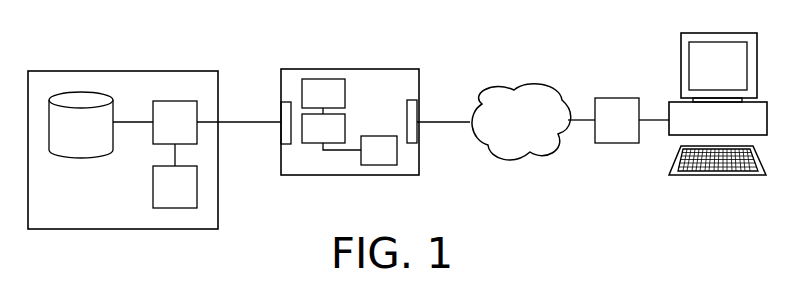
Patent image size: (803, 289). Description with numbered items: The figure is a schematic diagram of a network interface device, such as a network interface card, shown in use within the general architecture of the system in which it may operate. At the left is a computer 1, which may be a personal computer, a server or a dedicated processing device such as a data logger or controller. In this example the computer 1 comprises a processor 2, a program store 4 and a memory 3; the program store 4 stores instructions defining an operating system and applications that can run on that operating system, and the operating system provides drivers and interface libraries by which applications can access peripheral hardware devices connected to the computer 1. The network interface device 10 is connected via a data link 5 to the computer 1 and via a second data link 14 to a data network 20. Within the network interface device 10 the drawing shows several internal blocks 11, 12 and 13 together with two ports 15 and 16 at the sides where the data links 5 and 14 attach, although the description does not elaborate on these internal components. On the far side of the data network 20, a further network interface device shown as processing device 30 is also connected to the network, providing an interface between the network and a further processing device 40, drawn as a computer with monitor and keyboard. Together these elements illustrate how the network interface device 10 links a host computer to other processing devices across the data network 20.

The computer 1 is at (50, 229).
The processor 2 is at (175, 101).
The memory 3 is at (175, 208).
The program store 4 is at (80, 92).
The data link 5 is at (250, 125).
The network interface device 10 is at (396, 69).
The processing module 11 is at (325, 79).
The processing module 12 is at (316, 143).
The memory module 13 is at (382, 165).
The data link 14 is at (447, 125).
The input port 15 is at (281, 104).
The output port 16 is at (419, 104).
The data network 20 is at (533, 122).
The processing device 30 is at (617, 143).
The processing device 40 is at (718, 192).